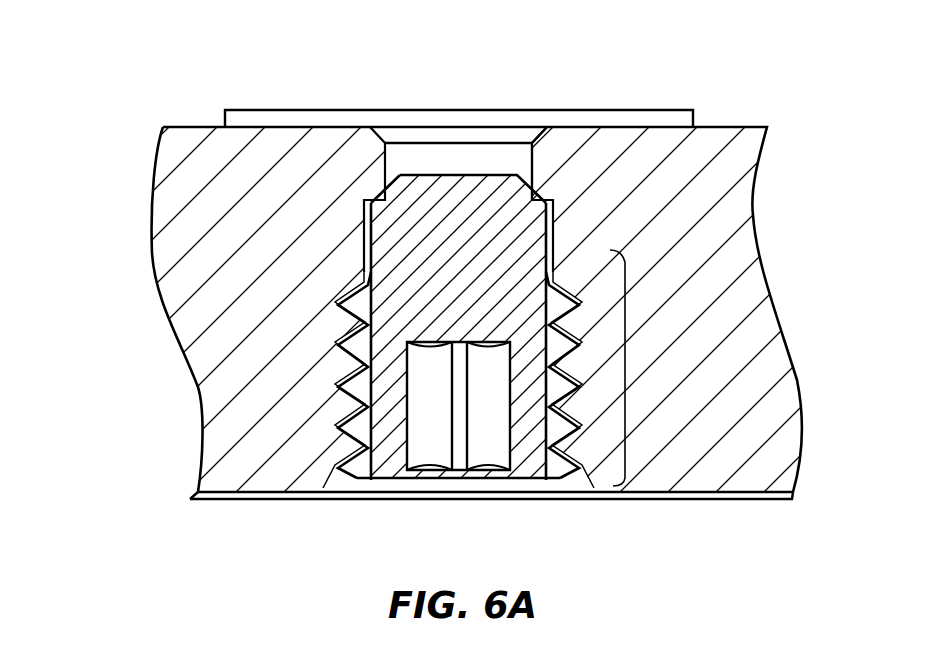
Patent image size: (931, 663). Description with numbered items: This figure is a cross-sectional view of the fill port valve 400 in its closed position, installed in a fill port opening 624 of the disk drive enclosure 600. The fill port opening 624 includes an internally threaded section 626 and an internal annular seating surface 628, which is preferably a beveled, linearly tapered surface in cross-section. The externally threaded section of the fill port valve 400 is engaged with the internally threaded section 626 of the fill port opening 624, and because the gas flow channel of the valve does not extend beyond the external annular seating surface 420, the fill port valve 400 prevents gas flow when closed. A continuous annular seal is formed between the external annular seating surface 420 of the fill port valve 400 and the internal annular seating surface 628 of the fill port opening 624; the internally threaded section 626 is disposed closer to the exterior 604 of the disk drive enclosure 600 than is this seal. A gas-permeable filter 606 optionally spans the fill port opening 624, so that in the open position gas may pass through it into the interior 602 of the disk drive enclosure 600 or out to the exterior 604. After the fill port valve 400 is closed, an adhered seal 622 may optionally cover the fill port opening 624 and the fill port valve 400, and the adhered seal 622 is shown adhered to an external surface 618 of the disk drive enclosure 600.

The fill port valve 400 is at (387, 442).
The external annular seating surface 420 is at (395, 193).
The disk drive enclosure 600 is at (200, 277).
The interior 602 is at (274, 30).
The exterior 604 is at (369, 573).
The gas-permeable filter 606 is at (258, 118).
The external surface 618 is at (707, 494).
The adhered seal 622 is at (567, 501).
The fill port opening 624 is at (502, 162).
The internally threaded section 626 is at (627, 370).
The internal annular seating surface 628 is at (548, 183).